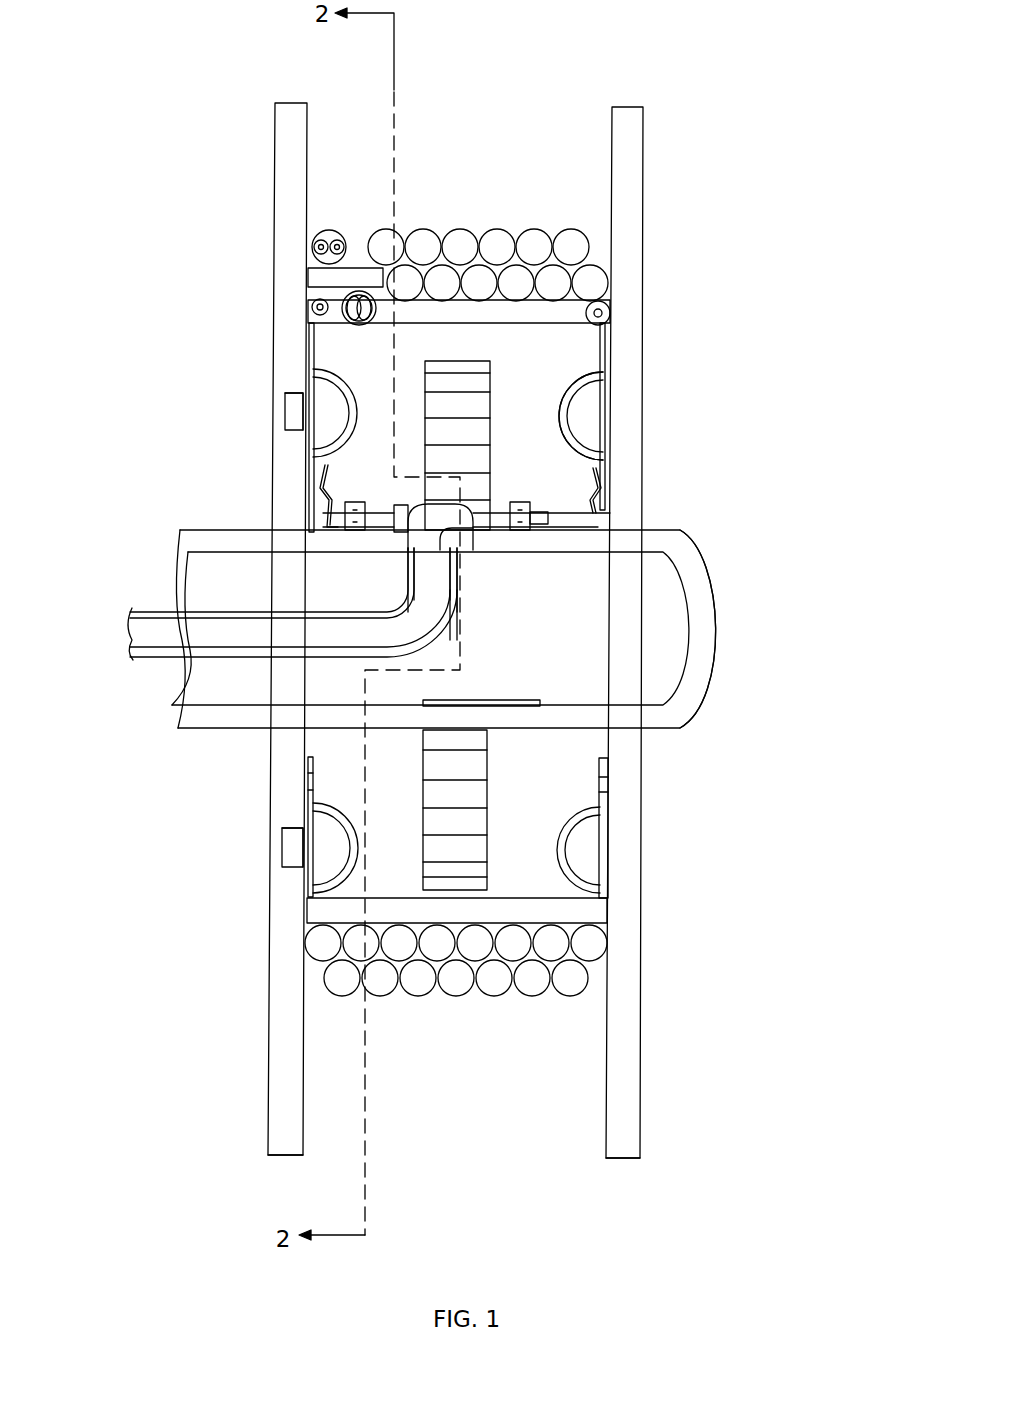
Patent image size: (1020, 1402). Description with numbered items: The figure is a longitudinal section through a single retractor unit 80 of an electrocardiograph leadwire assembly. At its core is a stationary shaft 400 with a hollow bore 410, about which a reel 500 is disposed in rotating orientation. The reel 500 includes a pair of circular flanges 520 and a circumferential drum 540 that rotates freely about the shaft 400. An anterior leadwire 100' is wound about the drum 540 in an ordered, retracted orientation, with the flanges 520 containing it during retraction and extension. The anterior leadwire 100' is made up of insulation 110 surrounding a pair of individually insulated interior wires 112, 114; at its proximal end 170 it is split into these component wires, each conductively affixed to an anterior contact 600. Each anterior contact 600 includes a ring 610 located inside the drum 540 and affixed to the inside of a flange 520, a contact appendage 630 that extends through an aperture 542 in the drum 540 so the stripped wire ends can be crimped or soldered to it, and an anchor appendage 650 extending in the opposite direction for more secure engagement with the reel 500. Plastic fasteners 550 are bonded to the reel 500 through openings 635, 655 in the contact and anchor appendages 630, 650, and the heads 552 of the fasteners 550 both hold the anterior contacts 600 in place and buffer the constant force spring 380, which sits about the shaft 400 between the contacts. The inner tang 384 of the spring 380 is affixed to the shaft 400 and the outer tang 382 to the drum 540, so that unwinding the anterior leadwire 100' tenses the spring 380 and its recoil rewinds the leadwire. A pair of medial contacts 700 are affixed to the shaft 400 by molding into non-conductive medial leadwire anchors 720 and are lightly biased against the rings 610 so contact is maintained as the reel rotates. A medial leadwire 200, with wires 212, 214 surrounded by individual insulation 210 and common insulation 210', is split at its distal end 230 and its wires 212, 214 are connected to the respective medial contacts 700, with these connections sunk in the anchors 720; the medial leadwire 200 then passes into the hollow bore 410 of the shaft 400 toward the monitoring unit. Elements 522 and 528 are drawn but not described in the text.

The retractor unit 80 is at (704, 81).
The anterior leadwire 100' is at (456, 555).
The insulation 110 is at (305, 262).
The interior wire 112 is at (319, 232).
The interior wire 114 is at (336, 232).
The proximal end 170 is at (361, 326).
The medial leadwire 200 is at (133, 655).
The individual insulation 210 is at (431, 576).
The common insulation 210' is at (499, 629).
The wire 212 is at (500, 520).
The wire 214 is at (368, 527).
The distal end 230 is at (393, 505).
The constant force spring 380 is at (450, 795).
The outer tang 382 is at (478, 923).
The inner tang 384 is at (484, 700).
The stationary shaft 400 is at (698, 674).
The hollow bore 410 is at (658, 682).
The reel 500 is at (625, 1158).
The circular flange 520 is at (288, 193).
The support bar 522 is at (315, 276).
The bracket 528 is at (285, 397).
The drum 540 is at (525, 338).
The aperture 542 is at (592, 325).
The plastic fastener 550 is at (317, 447).
The head 552 is at (588, 837).
The anterior contact 600 is at (626, 381).
The ring 610 is at (310, 793).
The contact appendage 630 is at (610, 313).
The opening 635 is at (300, 437).
The anchor appendage 650 is at (300, 877).
The opening 655 is at (310, 848).
The medial contact 700 is at (324, 484).
The medial leadwire anchor 720 is at (345, 512).